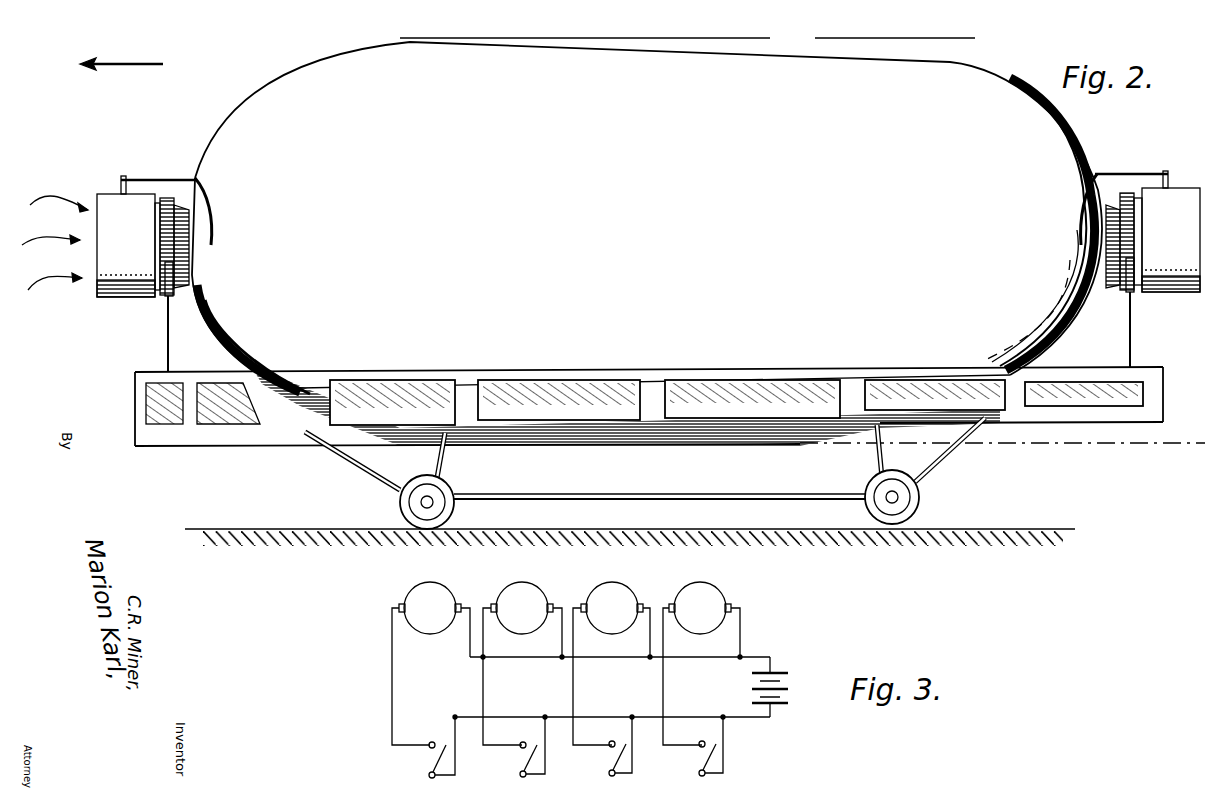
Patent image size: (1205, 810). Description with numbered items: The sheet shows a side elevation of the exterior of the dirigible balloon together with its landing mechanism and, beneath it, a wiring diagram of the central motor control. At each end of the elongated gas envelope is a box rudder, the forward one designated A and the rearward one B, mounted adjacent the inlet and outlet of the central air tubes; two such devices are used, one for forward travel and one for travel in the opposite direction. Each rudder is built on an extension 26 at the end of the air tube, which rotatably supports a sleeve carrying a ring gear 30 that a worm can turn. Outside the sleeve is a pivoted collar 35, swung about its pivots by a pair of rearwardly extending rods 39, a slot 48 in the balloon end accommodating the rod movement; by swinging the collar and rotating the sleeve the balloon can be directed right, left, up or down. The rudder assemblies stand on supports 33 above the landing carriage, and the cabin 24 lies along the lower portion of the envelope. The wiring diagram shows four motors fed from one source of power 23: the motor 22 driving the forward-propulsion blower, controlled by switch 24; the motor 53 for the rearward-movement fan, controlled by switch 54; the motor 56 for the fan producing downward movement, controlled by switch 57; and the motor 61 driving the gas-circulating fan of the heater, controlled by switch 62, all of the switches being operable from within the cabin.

In FIG. 2, the box rudder A is at (105, 203).
In FIG. 2, the box rudder B is at (1172, 196).
In FIG. 3, the motor 22 is at (405, 595).
In FIG. 3, the source of power 23 is at (775, 672).
In FIG. 2, the switch 24 is at (178, 440).
In FIG. 3, the switch 24 is at (430, 776).
In FIG. 2, the extension 26 is at (186, 275).
In FIG. 2, the ring gear 30 is at (168, 292).
In FIG. 2, the support post 33 is at (166, 338).
In FIG. 2, the collar 35 is at (110, 256).
In FIG. 2, the rods 39 is at (167, 170).
In FIG. 2, the slot 48 is at (212, 216).
In FIG. 3, the motor 53 is at (535, 590).
In FIG. 3, the switch 54 is at (521, 776).
In FIG. 3, the motor 56 is at (626, 590).
In FIG. 3, the switch 57 is at (610, 776).
In FIG. 3, the motor 61 is at (712, 590).
In FIG. 3, the switch 62 is at (706, 776).